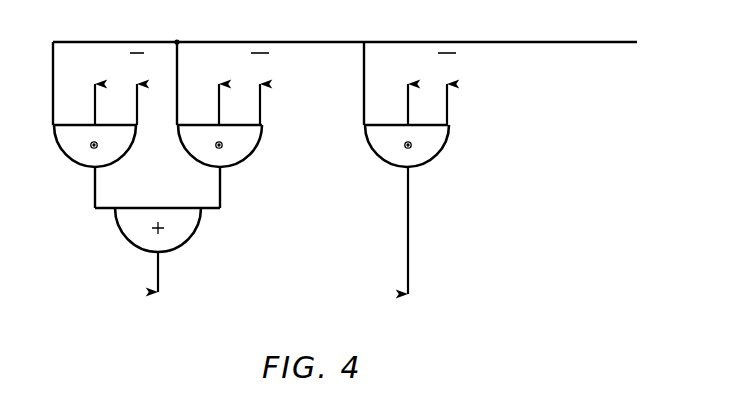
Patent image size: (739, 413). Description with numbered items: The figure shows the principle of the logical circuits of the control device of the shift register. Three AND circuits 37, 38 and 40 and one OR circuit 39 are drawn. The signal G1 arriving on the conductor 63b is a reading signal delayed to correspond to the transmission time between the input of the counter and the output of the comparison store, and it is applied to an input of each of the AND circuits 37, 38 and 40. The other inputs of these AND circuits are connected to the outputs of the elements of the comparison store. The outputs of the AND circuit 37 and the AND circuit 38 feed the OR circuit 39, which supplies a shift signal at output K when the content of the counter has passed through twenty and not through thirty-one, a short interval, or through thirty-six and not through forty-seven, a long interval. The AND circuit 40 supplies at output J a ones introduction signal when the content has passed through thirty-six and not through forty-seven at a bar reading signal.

The AND circuit 37 is at (82, 153).
The AND circuit 38 is at (200, 152).
The OR circuit 39 is at (133, 246).
The AND circuit 40 is at (383, 151).
The symbolic channel 63b is at (593, 42).